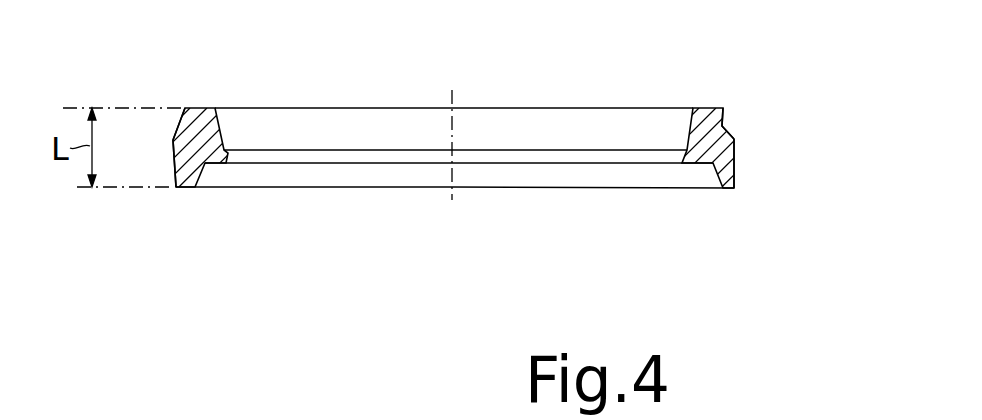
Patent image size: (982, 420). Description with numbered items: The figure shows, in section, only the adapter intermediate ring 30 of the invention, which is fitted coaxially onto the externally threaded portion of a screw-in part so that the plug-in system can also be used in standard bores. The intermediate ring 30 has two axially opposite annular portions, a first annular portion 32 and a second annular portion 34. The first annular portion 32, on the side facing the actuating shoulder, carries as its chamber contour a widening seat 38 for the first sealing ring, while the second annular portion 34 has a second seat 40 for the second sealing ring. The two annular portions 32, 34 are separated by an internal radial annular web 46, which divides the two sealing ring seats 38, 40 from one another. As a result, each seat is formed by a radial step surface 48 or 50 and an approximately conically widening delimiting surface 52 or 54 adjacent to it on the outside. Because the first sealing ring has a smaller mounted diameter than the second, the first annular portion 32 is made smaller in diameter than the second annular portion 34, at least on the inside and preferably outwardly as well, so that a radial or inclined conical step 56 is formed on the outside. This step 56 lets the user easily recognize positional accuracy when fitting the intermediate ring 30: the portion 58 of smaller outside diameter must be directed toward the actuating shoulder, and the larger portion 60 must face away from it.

The intermediate ring 30 is at (739, 89).
The first annular portion 32 is at (203, 97).
The second annular portion 34 is at (185, 200).
The widening seat 38 is at (266, 121).
The second seat 40 is at (323, 177).
The internal radial annular web 46 is at (573, 156).
The radial step surface 48 is at (491, 137).
The radial step surface 50 is at (412, 168).
The conically widening delimiting surface 52 is at (616, 127).
The conically widening delimiting surface 54 is at (650, 173).
The step 56 is at (727, 132).
The portion of smaller outside diameter 58 is at (726, 117).
The larger portion 60 is at (749, 165).